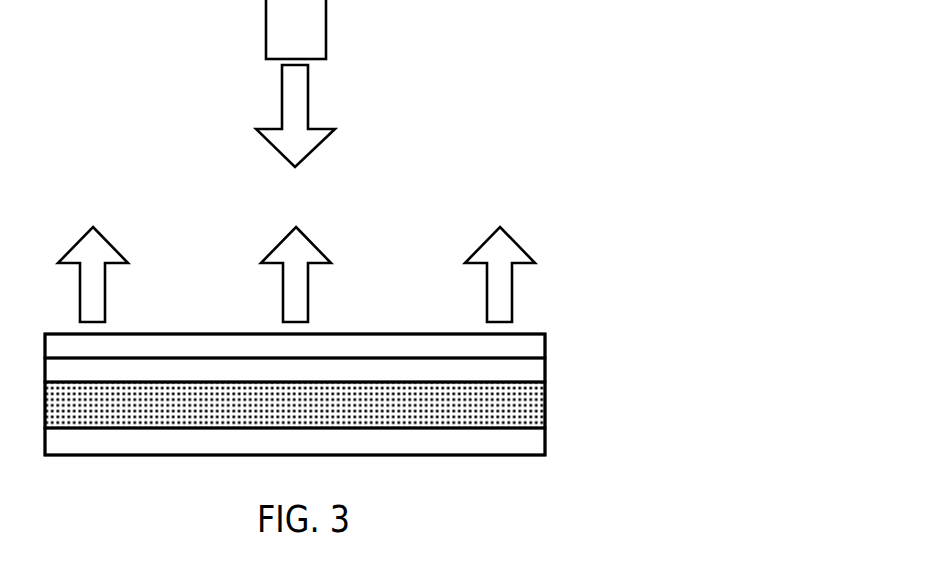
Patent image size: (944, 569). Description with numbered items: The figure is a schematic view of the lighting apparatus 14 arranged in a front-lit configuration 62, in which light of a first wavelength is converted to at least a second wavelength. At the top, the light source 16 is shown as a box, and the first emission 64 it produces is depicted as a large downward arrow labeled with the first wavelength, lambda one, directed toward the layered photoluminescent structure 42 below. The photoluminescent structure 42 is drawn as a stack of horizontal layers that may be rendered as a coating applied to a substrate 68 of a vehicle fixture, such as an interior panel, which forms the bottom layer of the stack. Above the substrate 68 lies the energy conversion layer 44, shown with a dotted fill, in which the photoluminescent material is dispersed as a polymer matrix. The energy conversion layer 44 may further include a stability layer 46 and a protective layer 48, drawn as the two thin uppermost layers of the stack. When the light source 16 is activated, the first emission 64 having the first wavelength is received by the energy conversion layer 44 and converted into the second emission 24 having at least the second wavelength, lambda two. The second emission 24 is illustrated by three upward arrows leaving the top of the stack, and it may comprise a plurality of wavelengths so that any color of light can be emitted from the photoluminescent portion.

The lighting apparatus 14 is at (345, 252).
The front-lit configuration 62 is at (531, 33).
The light source 16 is at (286, 38).
The first emission 64 is at (303, 105).
The second emission 24 is at (100, 296).
The photoluminescent structure 42 is at (583, 310).
The protective layer 48 is at (540, 347).
The stability layer 46 is at (540, 370).
The energy conversion layer 44 is at (540, 405).
The substrate 68 is at (492, 452).